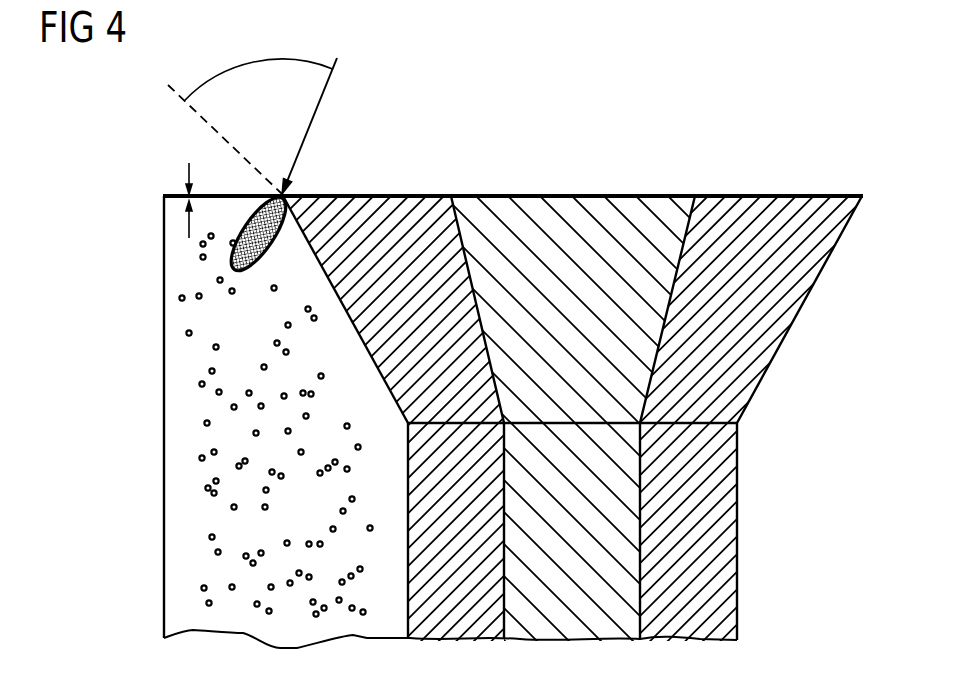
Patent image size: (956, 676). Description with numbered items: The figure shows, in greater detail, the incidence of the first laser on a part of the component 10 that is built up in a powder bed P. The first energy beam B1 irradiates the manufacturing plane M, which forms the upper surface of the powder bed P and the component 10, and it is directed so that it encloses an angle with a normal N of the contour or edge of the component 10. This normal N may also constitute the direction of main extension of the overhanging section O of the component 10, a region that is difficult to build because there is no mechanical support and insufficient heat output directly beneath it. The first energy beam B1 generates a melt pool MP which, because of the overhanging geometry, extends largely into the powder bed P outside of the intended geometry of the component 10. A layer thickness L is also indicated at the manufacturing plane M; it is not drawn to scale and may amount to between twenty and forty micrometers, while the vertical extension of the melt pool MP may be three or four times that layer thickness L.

The component 10 is at (727, 498).
The overhanging section O is at (353, 327).
The powder bed P is at (200, 457).
The manufacturing plane M is at (430, 194).
The melt pool MP is at (250, 271).
The layer thickness L is at (182, 193).
The normal N is at (193, 112).
The first energy beam B1 is at (324, 100).